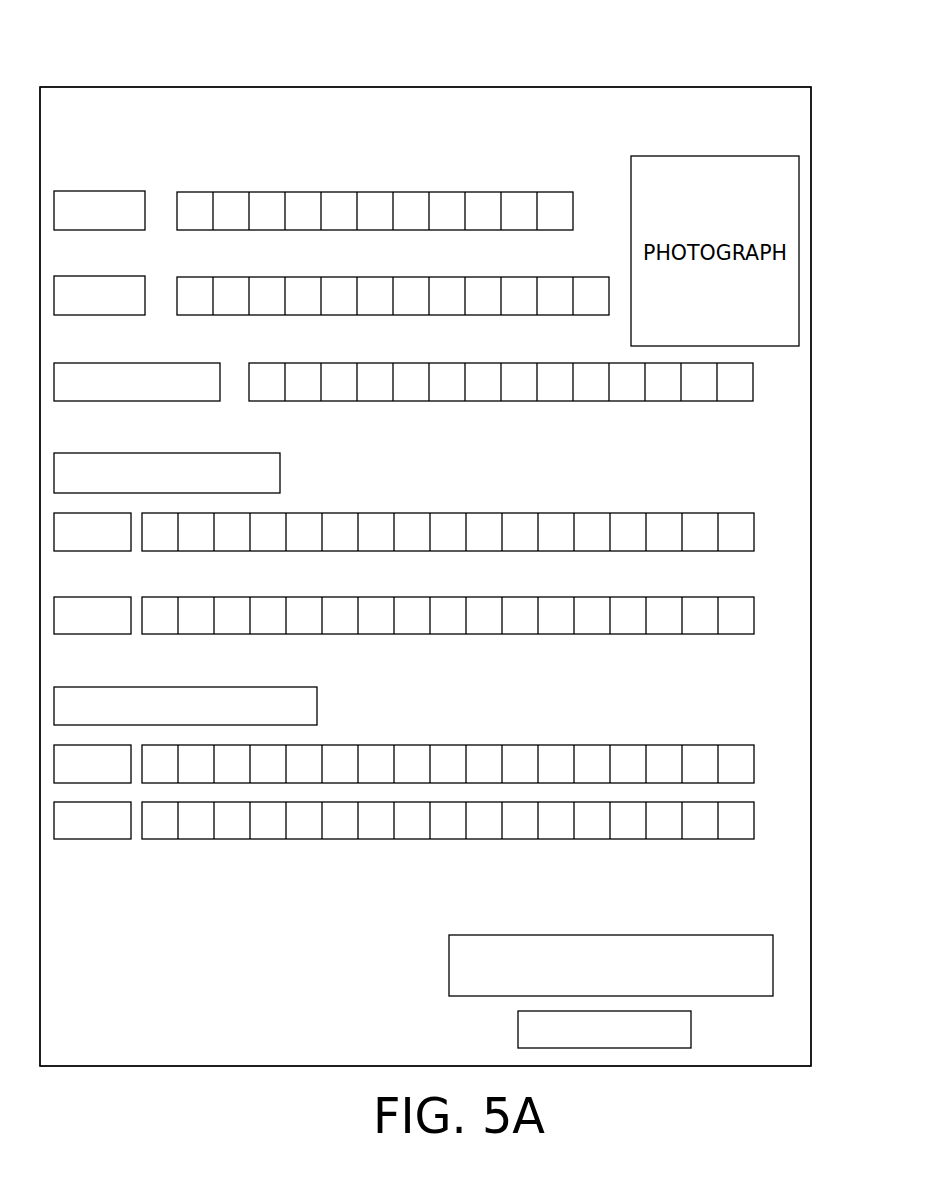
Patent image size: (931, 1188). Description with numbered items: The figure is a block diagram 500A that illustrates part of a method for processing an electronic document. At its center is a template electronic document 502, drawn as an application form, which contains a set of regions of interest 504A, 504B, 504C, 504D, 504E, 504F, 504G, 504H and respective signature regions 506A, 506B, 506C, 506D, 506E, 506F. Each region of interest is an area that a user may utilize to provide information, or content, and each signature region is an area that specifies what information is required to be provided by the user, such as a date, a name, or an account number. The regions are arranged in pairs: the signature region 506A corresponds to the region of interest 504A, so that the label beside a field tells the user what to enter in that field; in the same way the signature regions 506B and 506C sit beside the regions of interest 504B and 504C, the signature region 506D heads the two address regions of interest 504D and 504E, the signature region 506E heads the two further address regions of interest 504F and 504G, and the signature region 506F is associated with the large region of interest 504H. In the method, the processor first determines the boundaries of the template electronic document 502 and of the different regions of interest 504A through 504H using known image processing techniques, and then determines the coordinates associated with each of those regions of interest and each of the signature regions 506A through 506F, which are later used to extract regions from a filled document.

The block diagram 500A is at (242, 58).
The template electronic document 502 is at (398, 87).
The region of interest 504A is at (322, 192).
The region of interest 504B is at (322, 277).
The region of interest 504C is at (322, 363).
The region of interest 504D is at (322, 513).
The region of interest 504E is at (322, 634).
The region of interest 504F is at (322, 745).
The region of interest 504G is at (322, 839).
The region of interest 504H is at (449, 965).
The signature region 506A is at (88, 191).
The signature region 506B is at (88, 276).
The signature region 506C is at (88, 363).
The signature region 506D is at (88, 453).
The signature region 506E is at (185, 687).
The signature region 506F is at (518, 1028).